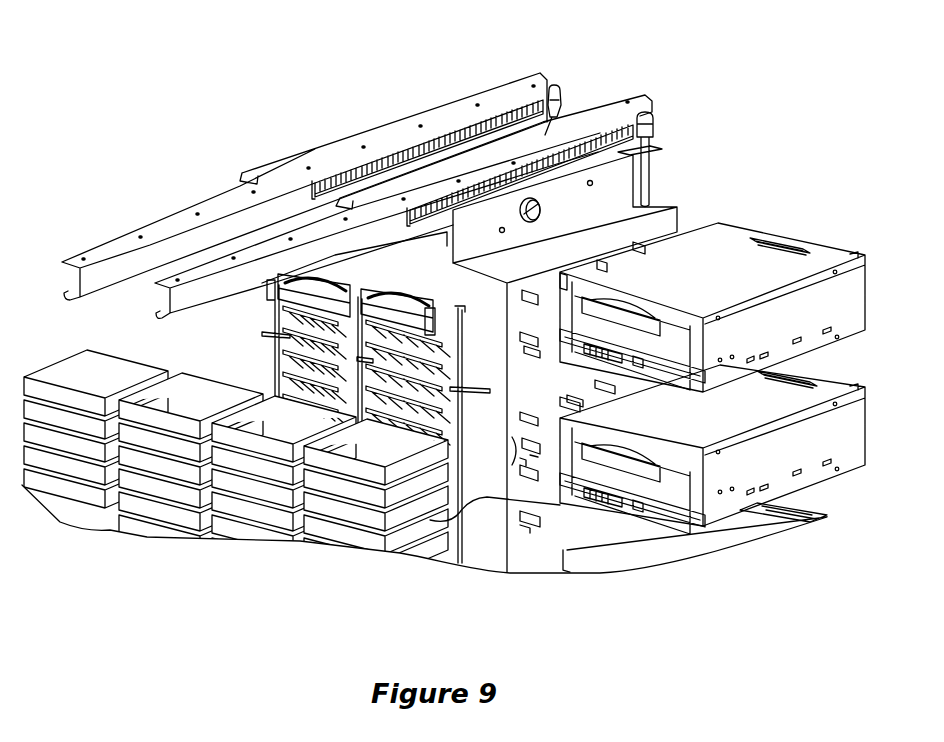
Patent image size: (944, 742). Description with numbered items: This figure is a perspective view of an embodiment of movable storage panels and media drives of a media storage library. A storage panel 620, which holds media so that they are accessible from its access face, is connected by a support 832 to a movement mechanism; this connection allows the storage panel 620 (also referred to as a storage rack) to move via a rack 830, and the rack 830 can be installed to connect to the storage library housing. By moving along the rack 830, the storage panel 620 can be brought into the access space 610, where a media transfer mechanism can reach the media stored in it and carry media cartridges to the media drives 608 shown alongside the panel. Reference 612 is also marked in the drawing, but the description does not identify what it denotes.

The rack 830 is at (553, 92).
The support 832 is at (607, 176).
The storage panel 620 is at (676, 210).
The media drives 608 is at (753, 265).
The disk drive cage 612 is at (442, 385).
The access space 610 is at (573, 507).